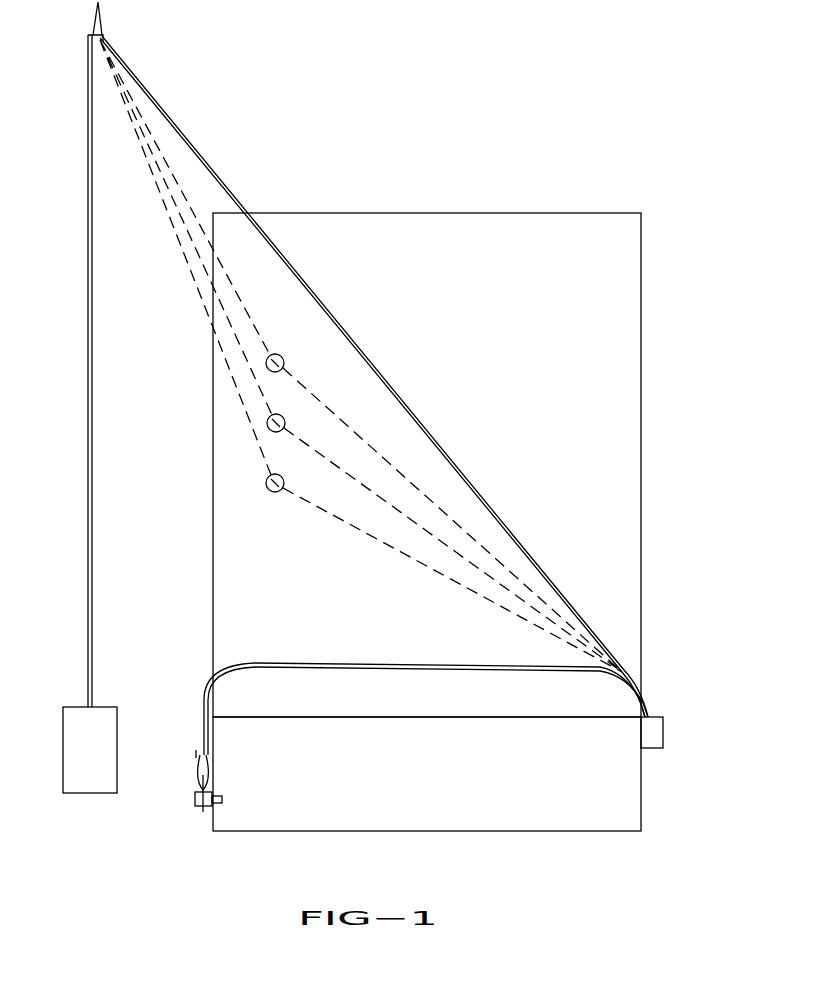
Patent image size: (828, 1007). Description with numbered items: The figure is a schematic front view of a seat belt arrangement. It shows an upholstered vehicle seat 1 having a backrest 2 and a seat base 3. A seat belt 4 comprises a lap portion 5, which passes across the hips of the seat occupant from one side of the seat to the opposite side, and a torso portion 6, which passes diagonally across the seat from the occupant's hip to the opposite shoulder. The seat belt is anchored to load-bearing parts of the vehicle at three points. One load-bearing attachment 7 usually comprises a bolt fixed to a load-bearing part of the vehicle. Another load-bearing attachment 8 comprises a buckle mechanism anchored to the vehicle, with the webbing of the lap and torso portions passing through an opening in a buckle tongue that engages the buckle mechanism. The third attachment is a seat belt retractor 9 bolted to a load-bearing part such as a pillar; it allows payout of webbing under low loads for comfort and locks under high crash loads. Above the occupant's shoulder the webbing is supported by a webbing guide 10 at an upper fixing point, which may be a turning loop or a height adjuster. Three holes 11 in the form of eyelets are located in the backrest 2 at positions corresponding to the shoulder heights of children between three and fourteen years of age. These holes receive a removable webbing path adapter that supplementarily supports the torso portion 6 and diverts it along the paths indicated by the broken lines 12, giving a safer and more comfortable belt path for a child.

The vehicle seat 1 is at (474, 522).
The backrest 2 is at (608, 310).
The seat base 3 is at (622, 782).
The seat belt 4 is at (96, 353).
The lap portion 5 is at (340, 666).
The torso portion 6 is at (378, 365).
The load-bearing attachment 7 is at (196, 800).
The load-bearing attachment 8 is at (665, 732).
The seat belt retractor 9 is at (65, 745).
The webbing guide 10 is at (104, 32).
The holes 11 is at (268, 476).
The broken lines 12 is at (185, 173).